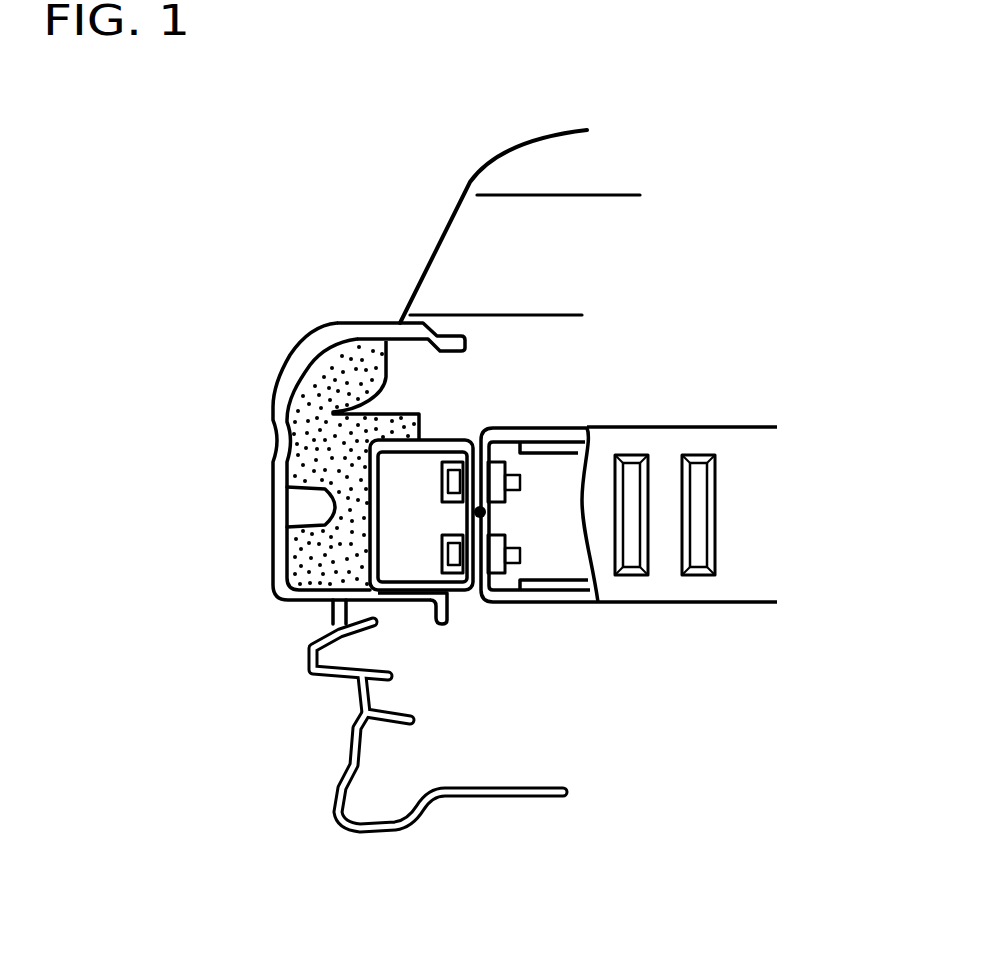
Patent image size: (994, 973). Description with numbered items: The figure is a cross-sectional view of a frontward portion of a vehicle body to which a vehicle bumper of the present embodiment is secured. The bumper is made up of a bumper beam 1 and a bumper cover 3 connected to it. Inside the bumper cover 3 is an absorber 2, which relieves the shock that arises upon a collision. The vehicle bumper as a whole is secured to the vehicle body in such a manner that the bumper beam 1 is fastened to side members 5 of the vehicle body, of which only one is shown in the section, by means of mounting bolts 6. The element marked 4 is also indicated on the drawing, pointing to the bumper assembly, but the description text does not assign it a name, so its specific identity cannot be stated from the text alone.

The bumper beam 1 is at (337, 621).
The absorber 2 is at (293, 418).
The bumper cover 3 is at (347, 337).
The weather strip 4 is at (285, 355).
The side member 5 is at (680, 448).
The mounting bolt 6 is at (520, 477).